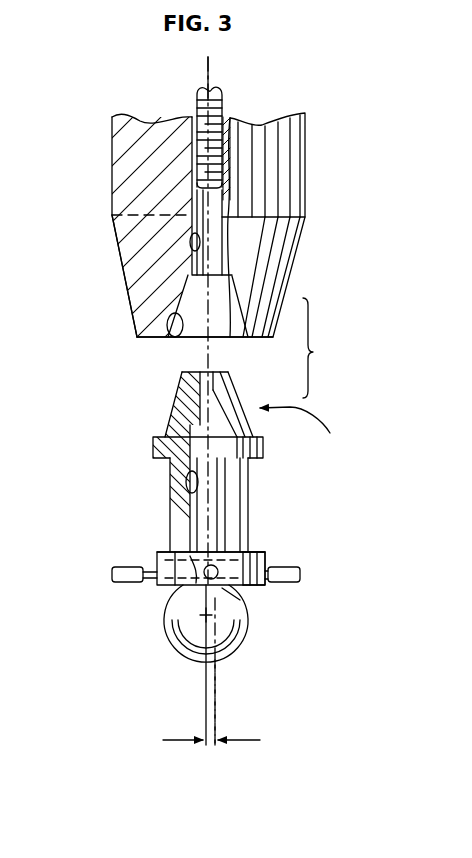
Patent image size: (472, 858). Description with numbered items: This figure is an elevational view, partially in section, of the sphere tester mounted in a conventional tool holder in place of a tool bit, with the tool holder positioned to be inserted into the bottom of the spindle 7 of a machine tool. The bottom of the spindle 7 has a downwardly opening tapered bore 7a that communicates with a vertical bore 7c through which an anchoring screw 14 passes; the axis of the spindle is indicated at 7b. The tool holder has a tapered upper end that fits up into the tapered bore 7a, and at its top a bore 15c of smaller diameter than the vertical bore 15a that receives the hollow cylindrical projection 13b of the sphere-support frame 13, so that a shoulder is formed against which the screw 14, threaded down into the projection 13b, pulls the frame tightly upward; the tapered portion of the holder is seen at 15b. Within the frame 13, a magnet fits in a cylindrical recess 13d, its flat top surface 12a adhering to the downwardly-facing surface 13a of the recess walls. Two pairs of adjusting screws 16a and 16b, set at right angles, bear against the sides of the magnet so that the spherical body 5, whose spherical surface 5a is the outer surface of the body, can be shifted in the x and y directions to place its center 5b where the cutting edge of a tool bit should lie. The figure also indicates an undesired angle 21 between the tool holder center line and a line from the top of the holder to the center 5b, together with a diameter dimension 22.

The spherical body 5 is at (172, 672).
The spherical surface 5a is at (162, 612).
The center of the spherical body 5b is at (173, 625).
The spindle 7 is at (306, 195).
The tapered bore 7a is at (178, 340).
The holder body axis 7b is at (210, 68).
The vertical bore 7c is at (121, 258).
The flat top surface of the magnet 12a is at (253, 542).
The sphere-support frame 13 is at (267, 546).
The downwardly-facing surface 13a is at (170, 552).
The hollow cylindrical projection 13b is at (160, 430).
The cylindrical recess 13d is at (177, 592).
The anchoring screw 14 is at (197, 100).
The vertical bore of the tool holder 15a is at (193, 481).
The collet tapered portion 15b is at (168, 417).
The bore at the top of the tool holder 15c is at (197, 365).
The adjusting screws 16a is at (222, 588).
The adjusting screws 16b is at (118, 567).
The offset axis 21 is at (238, 702).
The diameter 22 is at (233, 762).